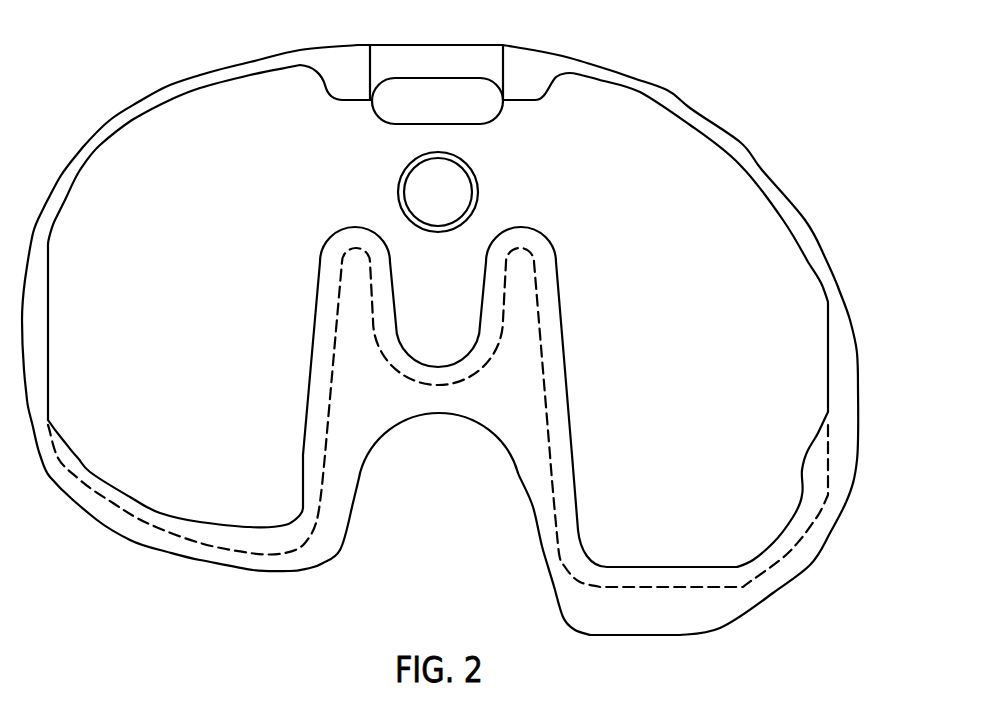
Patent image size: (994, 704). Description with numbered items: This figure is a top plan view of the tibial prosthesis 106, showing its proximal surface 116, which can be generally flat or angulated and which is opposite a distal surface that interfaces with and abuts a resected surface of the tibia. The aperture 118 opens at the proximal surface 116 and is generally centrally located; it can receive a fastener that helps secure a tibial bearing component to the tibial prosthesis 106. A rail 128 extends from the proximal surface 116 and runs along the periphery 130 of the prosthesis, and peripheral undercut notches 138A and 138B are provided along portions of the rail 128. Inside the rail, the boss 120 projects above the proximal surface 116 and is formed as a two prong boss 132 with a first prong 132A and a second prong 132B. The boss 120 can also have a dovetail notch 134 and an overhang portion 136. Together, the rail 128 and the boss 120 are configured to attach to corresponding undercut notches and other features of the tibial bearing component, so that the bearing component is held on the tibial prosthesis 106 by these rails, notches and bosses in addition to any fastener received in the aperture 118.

The tibial prosthesis 106 is at (645, 49).
The proximal surface 116 is at (740, 227).
The aperture 118 is at (398, 188).
The boss 120 is at (495, 318).
The rail 128 is at (163, 95).
The periphery 130 is at (832, 270).
The two prong boss 132 is at (520, 196).
The first prong 132A is at (348, 235).
The second prong 132B is at (527, 237).
The dovetail notch 134 is at (438, 417).
The overhang portion 136 is at (325, 340).
The peripheral undercut notch 138A is at (150, 515).
The peripheral undercut notch 138B is at (733, 573).